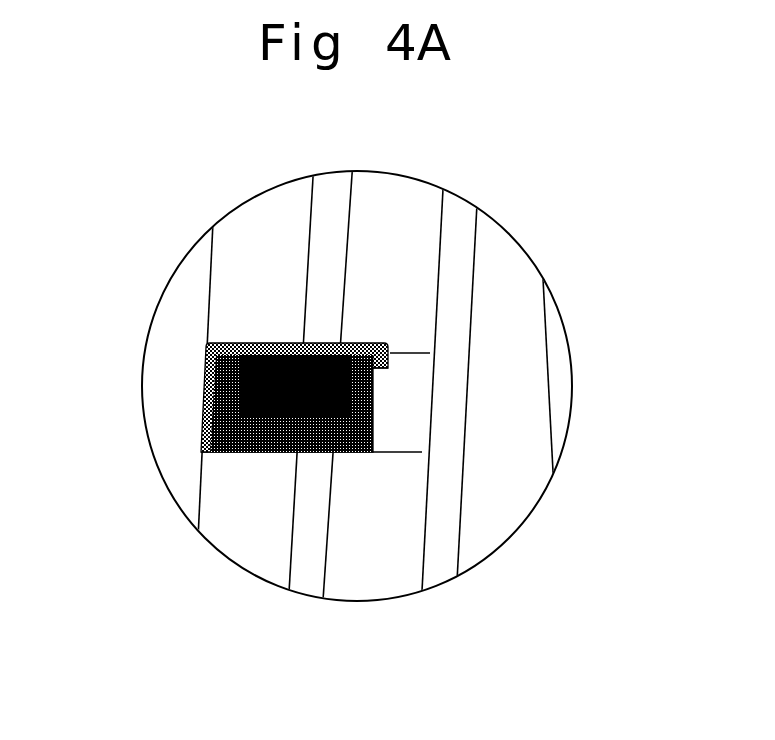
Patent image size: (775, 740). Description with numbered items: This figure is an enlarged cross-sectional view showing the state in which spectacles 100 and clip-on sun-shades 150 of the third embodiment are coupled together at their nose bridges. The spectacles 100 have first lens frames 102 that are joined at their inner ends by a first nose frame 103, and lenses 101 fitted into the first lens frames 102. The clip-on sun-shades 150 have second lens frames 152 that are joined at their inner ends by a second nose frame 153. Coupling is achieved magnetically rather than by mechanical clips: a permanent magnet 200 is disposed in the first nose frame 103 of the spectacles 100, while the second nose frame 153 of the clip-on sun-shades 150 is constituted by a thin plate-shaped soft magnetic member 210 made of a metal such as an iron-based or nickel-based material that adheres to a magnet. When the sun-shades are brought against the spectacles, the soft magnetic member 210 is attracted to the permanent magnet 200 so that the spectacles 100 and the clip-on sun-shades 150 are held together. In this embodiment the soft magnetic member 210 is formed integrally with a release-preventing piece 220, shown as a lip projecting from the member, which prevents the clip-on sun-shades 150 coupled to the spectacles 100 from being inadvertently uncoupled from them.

The spectacles 100 is at (563, 395).
The lenses 101 is at (532, 317).
The first lens frames 102 is at (512, 248).
The first nose frame 103 is at (390, 408).
The clip-on sun-shades 150 is at (173, 478).
The second lens frames 152 is at (238, 557).
The second nose frame 153 is at (196, 401).
The permanent magnet 200 is at (340, 420).
The soft magnetic member 210 is at (273, 343).
The release-preventing piece 220 is at (390, 360).